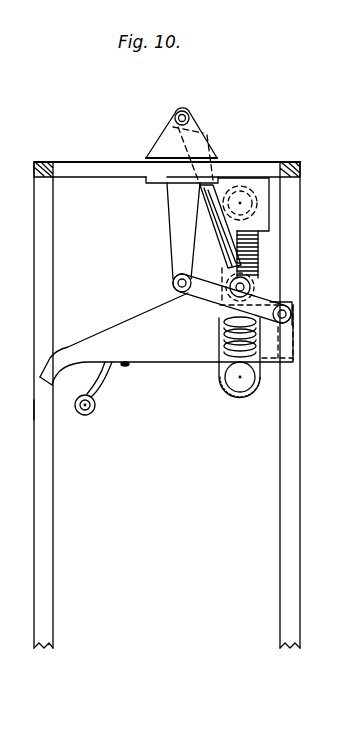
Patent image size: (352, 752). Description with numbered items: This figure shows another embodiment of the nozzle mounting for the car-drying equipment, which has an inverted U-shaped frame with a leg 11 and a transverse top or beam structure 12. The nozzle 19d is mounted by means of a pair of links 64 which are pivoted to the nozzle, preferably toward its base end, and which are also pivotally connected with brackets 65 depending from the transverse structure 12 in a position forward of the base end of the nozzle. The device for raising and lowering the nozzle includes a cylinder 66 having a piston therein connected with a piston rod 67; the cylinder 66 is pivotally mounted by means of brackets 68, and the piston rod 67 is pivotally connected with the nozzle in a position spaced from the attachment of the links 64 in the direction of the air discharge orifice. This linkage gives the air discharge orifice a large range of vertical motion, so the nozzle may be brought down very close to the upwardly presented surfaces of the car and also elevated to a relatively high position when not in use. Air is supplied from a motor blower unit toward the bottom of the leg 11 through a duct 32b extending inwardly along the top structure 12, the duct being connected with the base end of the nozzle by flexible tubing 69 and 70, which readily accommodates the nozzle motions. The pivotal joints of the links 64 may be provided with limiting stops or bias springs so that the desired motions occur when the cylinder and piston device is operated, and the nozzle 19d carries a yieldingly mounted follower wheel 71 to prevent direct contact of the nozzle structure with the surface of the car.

The transverse top or beam structure 12 is at (80, 158).
The brackets 68 is at (163, 149).
The cylinder 66 is at (220, 199).
The brackets 65 is at (171, 217).
The duct 32b is at (262, 175).
The piston rod 67 is at (262, 263).
The flexible tubing 70 is at (247, 273).
The links 64 is at (178, 298).
The follower wheels 71 is at (95, 416).
The flexible tubing 69 is at (240, 396).
The nozzle 19d is at (177, 348).
The leg 11 is at (28, 408).